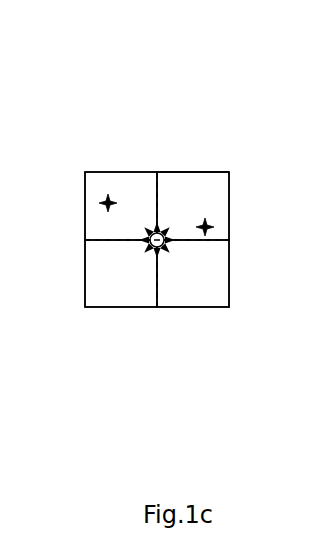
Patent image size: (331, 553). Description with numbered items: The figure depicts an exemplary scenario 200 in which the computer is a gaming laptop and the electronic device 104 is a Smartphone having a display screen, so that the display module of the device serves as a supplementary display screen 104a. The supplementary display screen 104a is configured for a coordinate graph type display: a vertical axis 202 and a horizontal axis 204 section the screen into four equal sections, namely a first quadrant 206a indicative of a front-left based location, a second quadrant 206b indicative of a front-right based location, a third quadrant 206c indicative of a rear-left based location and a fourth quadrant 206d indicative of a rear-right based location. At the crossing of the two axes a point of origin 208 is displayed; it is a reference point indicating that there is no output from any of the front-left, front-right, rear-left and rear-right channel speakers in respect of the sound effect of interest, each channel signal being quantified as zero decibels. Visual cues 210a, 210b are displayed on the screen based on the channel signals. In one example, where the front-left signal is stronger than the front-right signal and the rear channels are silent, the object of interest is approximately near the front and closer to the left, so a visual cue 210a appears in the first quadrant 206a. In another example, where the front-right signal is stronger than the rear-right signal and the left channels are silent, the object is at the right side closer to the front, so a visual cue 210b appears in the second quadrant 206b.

The exemplary scenario 200 is at (250, 87).
The supplementary display screen 104a is at (216, 162).
The electronic device 104 is at (85, 172).
The vertical axis 202 is at (158, 174).
The horizontal axis 204 is at (229, 240).
The first quadrant 206a is at (95, 213).
The second quadrant 206b is at (213, 200).
The third quadrant 206c is at (98, 283).
The fourth quadrant 206d is at (213, 286).
The point of origin 208 is at (148, 262).
The visual cue 210a is at (108, 192).
The visual cue 210b is at (205, 237).